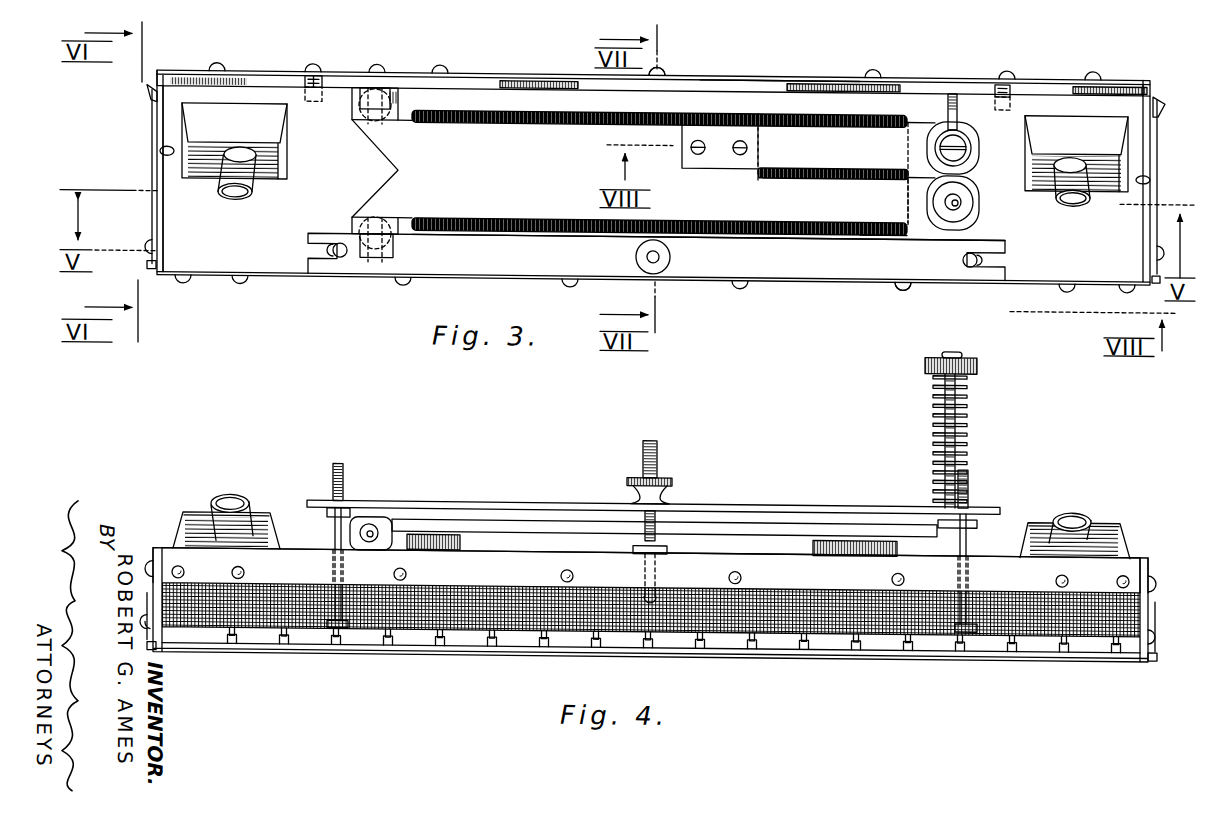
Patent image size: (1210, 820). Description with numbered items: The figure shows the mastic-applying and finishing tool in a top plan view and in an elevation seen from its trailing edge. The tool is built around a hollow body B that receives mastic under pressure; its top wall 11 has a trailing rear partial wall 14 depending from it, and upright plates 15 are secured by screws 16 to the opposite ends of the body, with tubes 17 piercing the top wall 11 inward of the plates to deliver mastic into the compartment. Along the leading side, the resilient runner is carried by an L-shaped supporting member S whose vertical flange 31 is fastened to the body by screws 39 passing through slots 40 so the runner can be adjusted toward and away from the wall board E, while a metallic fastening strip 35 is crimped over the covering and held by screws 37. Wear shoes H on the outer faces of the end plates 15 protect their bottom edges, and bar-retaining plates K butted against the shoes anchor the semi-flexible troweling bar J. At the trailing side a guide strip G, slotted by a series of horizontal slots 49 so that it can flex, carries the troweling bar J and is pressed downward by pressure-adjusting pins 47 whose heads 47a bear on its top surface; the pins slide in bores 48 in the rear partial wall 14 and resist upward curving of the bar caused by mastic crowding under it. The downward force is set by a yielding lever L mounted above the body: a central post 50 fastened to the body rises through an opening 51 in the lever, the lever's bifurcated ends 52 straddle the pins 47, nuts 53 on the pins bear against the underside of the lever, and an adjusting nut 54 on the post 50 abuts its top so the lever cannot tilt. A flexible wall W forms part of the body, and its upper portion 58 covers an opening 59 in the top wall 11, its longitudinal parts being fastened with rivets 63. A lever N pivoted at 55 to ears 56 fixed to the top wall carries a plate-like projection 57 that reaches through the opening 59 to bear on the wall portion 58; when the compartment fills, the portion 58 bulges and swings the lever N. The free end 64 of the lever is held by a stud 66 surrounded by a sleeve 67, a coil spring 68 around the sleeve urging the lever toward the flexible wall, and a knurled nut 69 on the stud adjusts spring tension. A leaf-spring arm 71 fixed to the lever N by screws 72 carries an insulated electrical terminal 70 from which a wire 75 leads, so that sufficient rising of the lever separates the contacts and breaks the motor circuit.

In FIG. 3, the top wall 11 is at (341, 161).
In FIG. 4, the rear partial wall 14 is at (514, 570).
In FIG. 3, the upright plates 15 is at (164, 68).
In FIG. 4, the upright plates 15 is at (162, 546).
In FIG. 3, the screws 16 is at (147, 103).
In FIG. 3, the tubes 17 is at (236, 193).
In FIG. 4, the tubes 17 is at (245, 483).
In FIG. 3, the vertical flange 31 is at (760, 84).
In FIG. 3, the metallic fastening strip 35 is at (507, 75).
In FIG. 3, the screws 37 is at (665, 68).
In FIG. 3, the screws 39 is at (320, 68).
In FIG. 3, the slots 40 is at (305, 77).
In FIG. 3, the pressure-adjusting pins 47 is at (343, 254).
In FIG. 4, the pressure-adjusting pins 47 is at (344, 479).
In FIG. 4, the heads 47a is at (333, 624).
In FIG. 4, the bores 48 is at (333, 565).
In FIG. 4, the horizontal slots 49 is at (948, 647).
In FIG. 3, the post 50 is at (636, 248).
In FIG. 4, the post 50 is at (645, 445).
In FIG. 4, the opening 51 is at (630, 498).
In FIG. 3, the bifurcated ends 52 is at (308, 245).
In FIG. 4, the nuts 53 is at (328, 513).
In FIG. 3, the adjusting nut 54 is at (670, 248).
In FIG. 4, the adjusting nut 54 is at (672, 476).
In FIG. 3, the pivot 55 is at (379, 84).
In FIG. 4, the pivot 55 is at (372, 541).
In FIG. 3, the ears 56 is at (353, 94).
In FIG. 4, the ears 56 is at (383, 518).
In FIG. 4, the plate-like projection 57 is at (850, 531).
In FIG. 3, the upper portion of flexible wall 58 is at (530, 224).
In FIG. 3, the opening 59 is at (877, 230).
In FIG. 3, the rivets 63 is at (904, 274).
In FIG. 4, the rivets 63 is at (742, 565).
In FIG. 3, the free end 64 is at (906, 203).
In FIG. 3, the stud 66 is at (960, 188).
In FIG. 4, the stud 66 is at (963, 342).
In FIG. 4, the sleeve 67 is at (958, 440).
In FIG. 4, the coil spring 68 is at (963, 388).
In FIG. 3, the knurled nut 69 is at (973, 192).
In FIG. 4, the knurled nut 69 is at (932, 356).
In FIG. 3, the electrical terminal 70 is at (968, 133).
In FIG. 3, the leaf-spring arm 71 is at (856, 144).
In FIG. 3, the screws 72 is at (740, 148).
In FIG. 3, the wire 75 is at (948, 88).
In FIG. 3, the hollow body B is at (1052, 88).
In FIG. 4, the hollow body B is at (1132, 540).
In FIG. 4, the wall board E is at (1153, 650).
In FIG. 4, the guide strip G is at (836, 634).
In FIG. 3, the wear shoes H is at (162, 151).
In FIG. 4, the wear shoes H is at (1158, 588).
In FIG. 3, the troweling bar J is at (146, 264).
In FIG. 4, the troweling bar J is at (281, 651).
In FIG. 3, the bar-retaining plates K is at (150, 211).
In FIG. 4, the bar-retaining plates K is at (1162, 609).
In FIG. 3, the yielding lever L is at (792, 256).
In FIG. 4, the yielding lever L is at (805, 497).
In FIG. 3, the lever N is at (548, 162).
In FIG. 4, the lever N is at (498, 514).
In FIG. 3, the L-shaped supporting member S is at (838, 82).
In FIG. 4, the flexible wall W is at (720, 627).